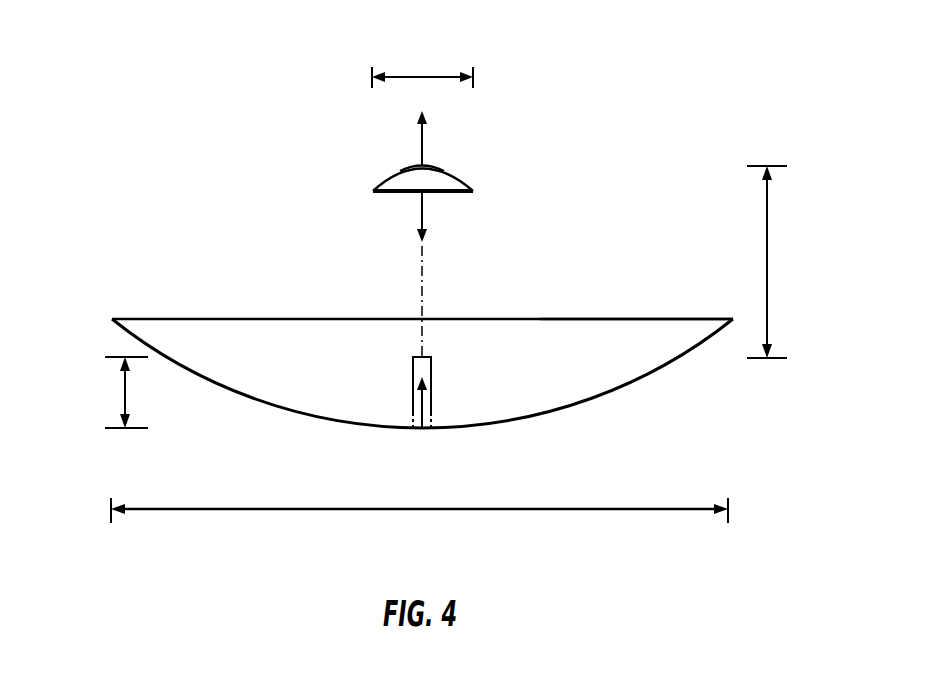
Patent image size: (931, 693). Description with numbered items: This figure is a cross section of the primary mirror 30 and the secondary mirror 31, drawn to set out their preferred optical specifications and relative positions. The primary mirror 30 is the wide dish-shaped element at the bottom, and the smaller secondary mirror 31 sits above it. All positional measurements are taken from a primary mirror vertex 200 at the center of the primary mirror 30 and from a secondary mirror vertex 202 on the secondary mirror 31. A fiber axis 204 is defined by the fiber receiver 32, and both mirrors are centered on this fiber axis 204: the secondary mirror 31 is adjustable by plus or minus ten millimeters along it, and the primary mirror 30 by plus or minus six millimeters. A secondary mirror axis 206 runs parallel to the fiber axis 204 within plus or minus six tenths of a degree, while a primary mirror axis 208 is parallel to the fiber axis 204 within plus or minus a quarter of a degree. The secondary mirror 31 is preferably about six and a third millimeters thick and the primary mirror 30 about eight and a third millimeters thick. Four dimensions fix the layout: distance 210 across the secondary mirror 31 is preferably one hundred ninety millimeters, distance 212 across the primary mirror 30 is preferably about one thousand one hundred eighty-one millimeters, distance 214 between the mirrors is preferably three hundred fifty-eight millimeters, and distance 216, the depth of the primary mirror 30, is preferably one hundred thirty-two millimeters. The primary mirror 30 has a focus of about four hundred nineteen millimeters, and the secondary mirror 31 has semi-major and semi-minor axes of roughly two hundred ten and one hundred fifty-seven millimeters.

The primary mirror 30 is at (211, 330).
The secondary mirror 31 is at (383, 183).
The fiber receiver 32 is at (583, 317).
The primary mirror vertex 200 is at (420, 432).
The secondary mirror vertex 202 is at (422, 163).
The fiber axis 204 is at (423, 147).
The secondary mirror axis 206 is at (420, 208).
The primary mirror axis 208 is at (425, 402).
The distance 210 is at (423, 67).
The distance 212 is at (350, 509).
The distance 214 is at (767, 258).
The distance 216 is at (123, 398).